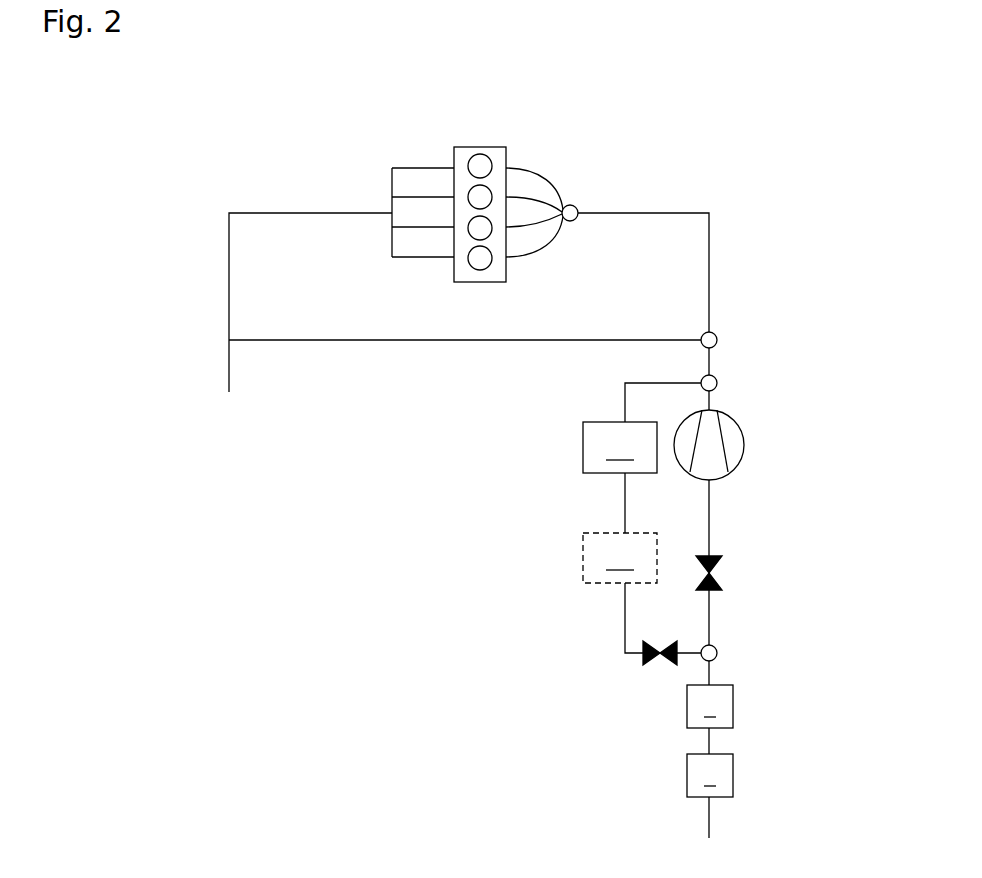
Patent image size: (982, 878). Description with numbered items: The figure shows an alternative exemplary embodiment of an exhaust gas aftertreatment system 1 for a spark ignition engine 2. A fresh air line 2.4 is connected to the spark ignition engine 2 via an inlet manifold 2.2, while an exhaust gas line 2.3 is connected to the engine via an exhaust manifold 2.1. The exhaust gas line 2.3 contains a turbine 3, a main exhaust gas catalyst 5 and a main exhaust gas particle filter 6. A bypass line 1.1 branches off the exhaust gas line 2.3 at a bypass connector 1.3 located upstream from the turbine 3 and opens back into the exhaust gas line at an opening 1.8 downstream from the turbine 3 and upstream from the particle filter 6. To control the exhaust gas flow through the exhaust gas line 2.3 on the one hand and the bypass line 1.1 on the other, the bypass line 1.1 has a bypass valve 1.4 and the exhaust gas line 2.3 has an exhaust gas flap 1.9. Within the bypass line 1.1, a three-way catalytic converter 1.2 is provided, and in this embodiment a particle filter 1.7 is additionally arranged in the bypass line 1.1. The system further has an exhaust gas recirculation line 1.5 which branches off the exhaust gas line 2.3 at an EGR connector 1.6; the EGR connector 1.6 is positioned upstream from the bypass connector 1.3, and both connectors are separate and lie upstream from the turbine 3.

The exhaust gas aftertreatment system 1 is at (780, 170).
The spark ignition engine 2 is at (498, 158).
The exhaust manifold 2.1 is at (547, 172).
The inlet manifold 2.2 is at (417, 167).
The exhaust gas line 2.3 is at (710, 230).
The fresh air line 2.4 is at (228, 293).
The bypass line 1.1 is at (625, 400).
The three-way catalytic converter 1.2 is at (620, 477).
The bypass connector 1.3 is at (717, 376).
The bypass valve 1.4 is at (660, 667).
The exhaust gas recirculation line 1.5 is at (285, 340).
The EGR connector 1.6 is at (717, 332).
The particle filter 1.7 is at (642, 593).
The opening 1.8 is at (717, 648).
The exhaust gas flap 1.9 is at (725, 572).
The turbine 3 is at (740, 436).
The main exhaust gas catalyst 5 is at (710, 706).
The main exhaust gas particle filter 6 is at (710, 775).